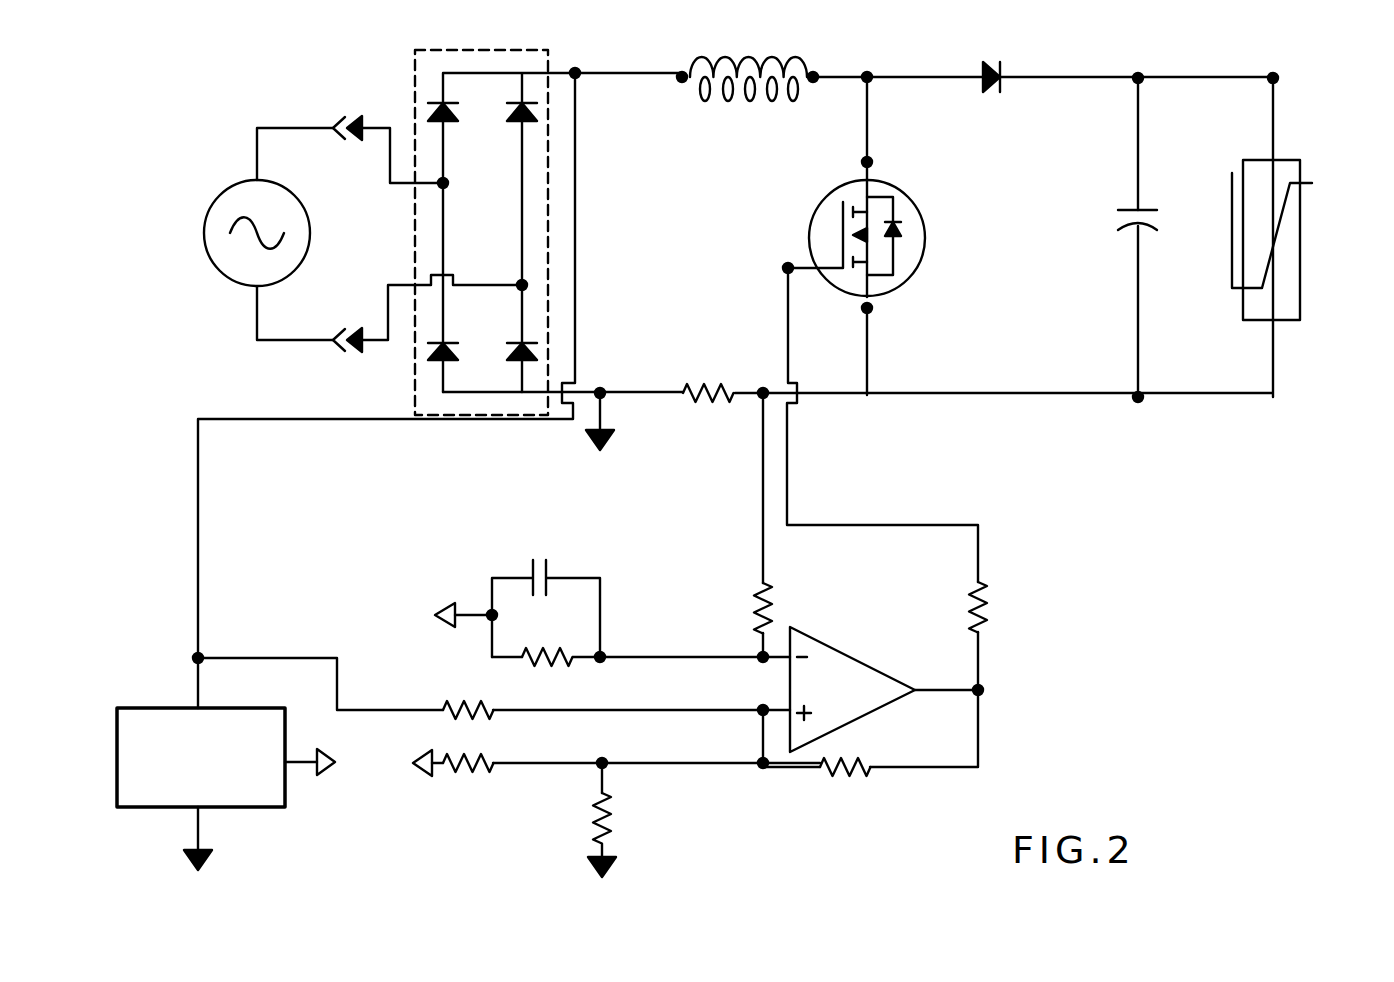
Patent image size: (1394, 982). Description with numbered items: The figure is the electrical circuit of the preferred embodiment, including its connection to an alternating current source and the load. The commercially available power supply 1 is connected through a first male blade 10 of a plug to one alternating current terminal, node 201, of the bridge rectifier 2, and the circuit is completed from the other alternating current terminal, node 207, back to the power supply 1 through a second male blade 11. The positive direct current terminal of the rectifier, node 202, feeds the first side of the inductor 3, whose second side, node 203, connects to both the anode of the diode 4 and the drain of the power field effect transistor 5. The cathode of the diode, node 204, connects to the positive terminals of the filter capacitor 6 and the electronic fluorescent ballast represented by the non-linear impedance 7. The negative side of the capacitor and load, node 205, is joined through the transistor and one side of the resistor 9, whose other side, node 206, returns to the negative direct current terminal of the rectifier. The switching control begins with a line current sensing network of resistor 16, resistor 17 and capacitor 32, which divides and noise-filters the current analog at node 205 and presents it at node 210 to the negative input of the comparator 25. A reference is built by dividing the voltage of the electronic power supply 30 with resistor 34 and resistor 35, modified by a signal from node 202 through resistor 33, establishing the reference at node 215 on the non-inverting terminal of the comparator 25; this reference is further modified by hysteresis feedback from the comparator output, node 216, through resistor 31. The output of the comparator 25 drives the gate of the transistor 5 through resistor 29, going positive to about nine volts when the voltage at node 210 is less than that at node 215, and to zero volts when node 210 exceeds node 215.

The power supply 1 is at (232, 285).
The bridge rectifier 2 is at (521, 48).
The inductor 3 is at (720, 57).
The diode 4 is at (1005, 63).
The power field effect transistor 5 is at (925, 233).
The filter capacitor 6 is at (1123, 223).
The non-linear impedance 7 is at (1302, 217).
The resistor 9 is at (722, 387).
The first male blade 10 is at (357, 118).
The second male blade 11 is at (355, 353).
The resistor 16 is at (750, 587).
The resistor 17 is at (548, 664).
The comparator 25 is at (860, 663).
The resistor 29 is at (987, 622).
The electronic power supply 30 is at (285, 790).
The resistor 31 is at (848, 774).
The capacitor 32 is at (533, 590).
The resistor 33 is at (465, 702).
The resistor 34 is at (472, 770).
The resistor 35 is at (613, 830).
The node 201 is at (466, 183).
The node 202 is at (577, 61).
The node 203 is at (867, 65).
The node 204 is at (1196, 67).
The node 205 is at (1136, 412).
The node 206 is at (604, 407).
The rectifier input node 207 is at (497, 274).
The node 210 is at (681, 646).
The node 215 is at (682, 750).
The comparator output node 216 is at (1001, 708).